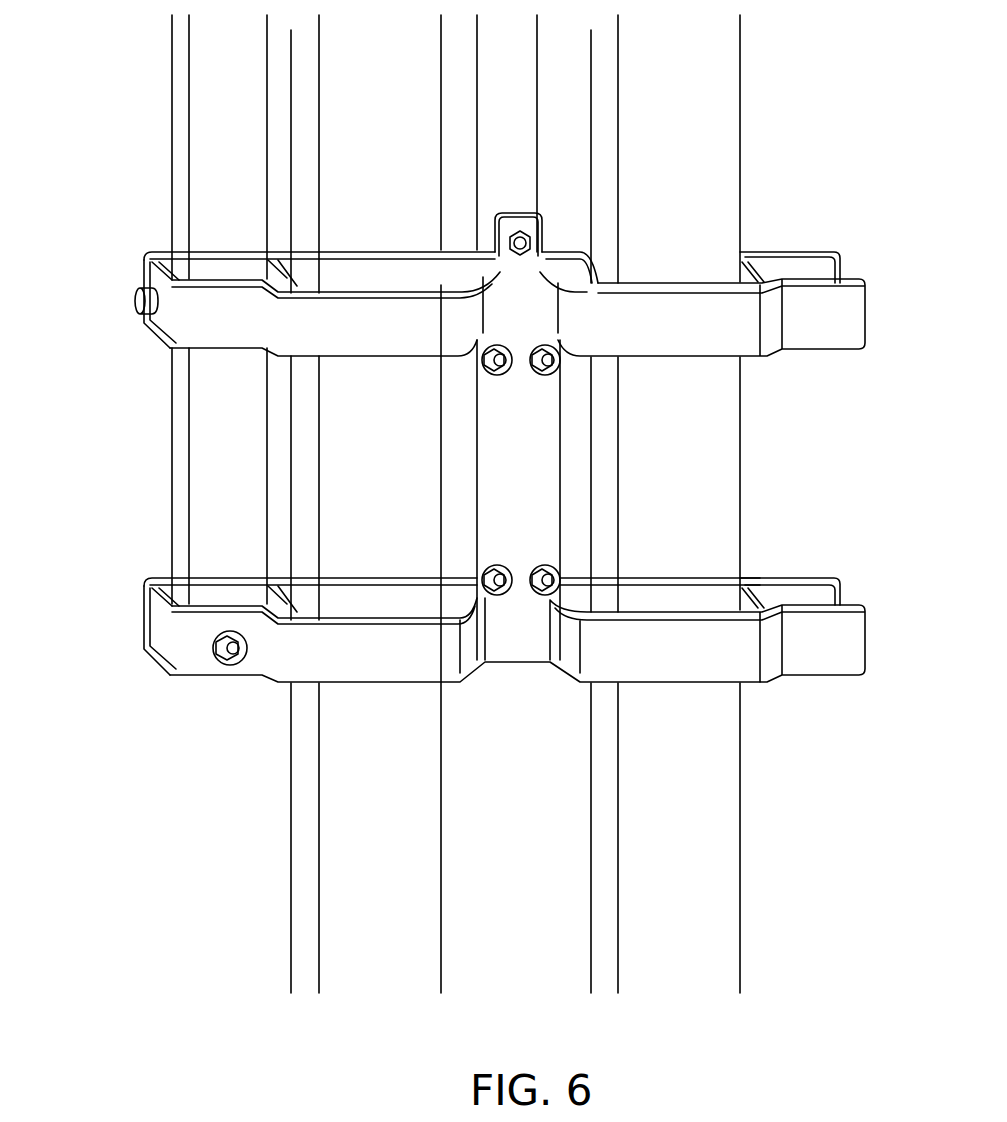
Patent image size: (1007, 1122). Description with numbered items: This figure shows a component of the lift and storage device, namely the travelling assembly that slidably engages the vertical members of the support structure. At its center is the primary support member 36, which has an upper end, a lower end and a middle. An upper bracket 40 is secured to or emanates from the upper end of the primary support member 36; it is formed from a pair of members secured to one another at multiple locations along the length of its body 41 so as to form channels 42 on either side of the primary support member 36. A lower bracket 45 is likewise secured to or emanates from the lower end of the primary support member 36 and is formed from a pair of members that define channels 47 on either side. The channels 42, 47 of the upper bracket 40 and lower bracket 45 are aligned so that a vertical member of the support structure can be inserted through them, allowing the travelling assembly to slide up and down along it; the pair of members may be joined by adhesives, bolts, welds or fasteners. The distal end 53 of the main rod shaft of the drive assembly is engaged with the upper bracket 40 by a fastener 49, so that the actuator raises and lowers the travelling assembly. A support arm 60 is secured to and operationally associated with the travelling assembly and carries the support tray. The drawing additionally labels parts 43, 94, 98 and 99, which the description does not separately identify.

The primary support member 36 is at (503, 467).
The upper bracket 40 is at (466, 336).
The body 41 is at (368, 320).
The channels 42 is at (615, 305).
The bracket end 43 is at (225, 305).
The lower bracket 45 is at (494, 669).
The channels 47 is at (690, 612).
The fastener 49 is at (532, 243).
The distal end 53 is at (515, 183).
The support arm 60 is at (210, 148).
The post 94 is at (710, 125).
The pin 98 is at (134, 300).
The lower bracket left piece 99 is at (230, 632).